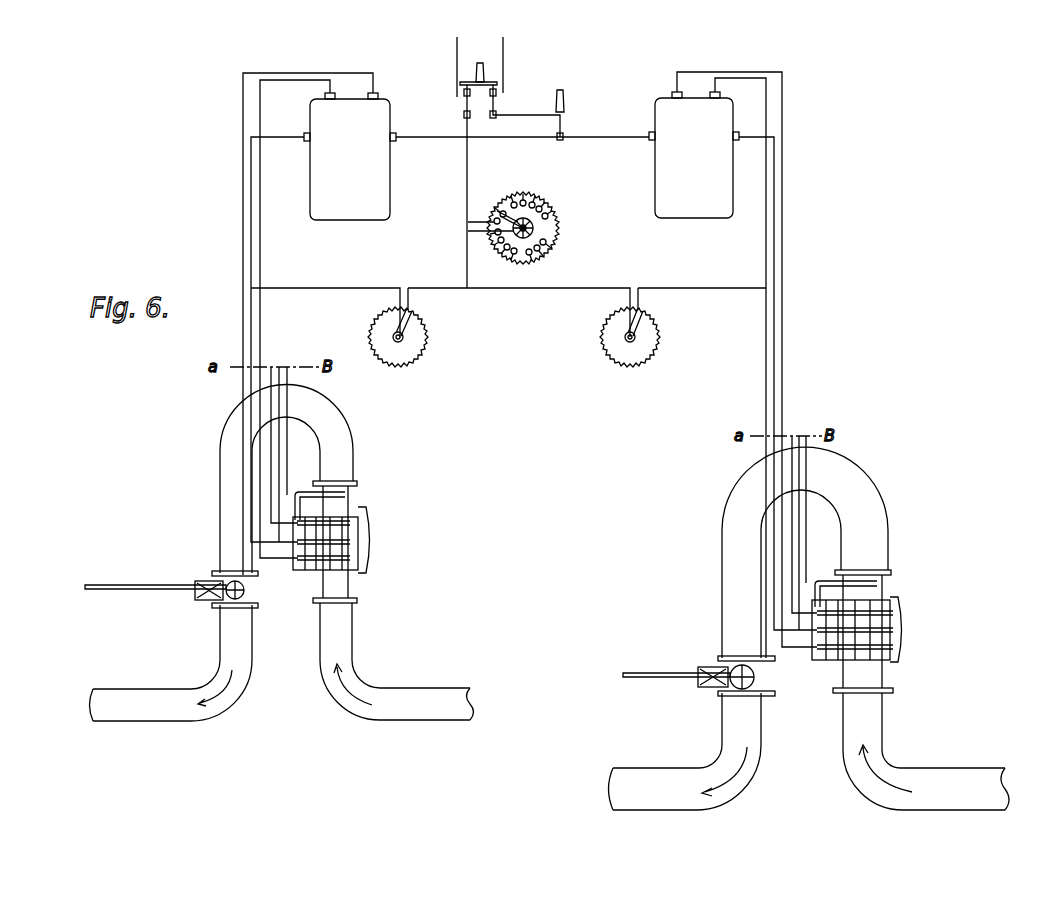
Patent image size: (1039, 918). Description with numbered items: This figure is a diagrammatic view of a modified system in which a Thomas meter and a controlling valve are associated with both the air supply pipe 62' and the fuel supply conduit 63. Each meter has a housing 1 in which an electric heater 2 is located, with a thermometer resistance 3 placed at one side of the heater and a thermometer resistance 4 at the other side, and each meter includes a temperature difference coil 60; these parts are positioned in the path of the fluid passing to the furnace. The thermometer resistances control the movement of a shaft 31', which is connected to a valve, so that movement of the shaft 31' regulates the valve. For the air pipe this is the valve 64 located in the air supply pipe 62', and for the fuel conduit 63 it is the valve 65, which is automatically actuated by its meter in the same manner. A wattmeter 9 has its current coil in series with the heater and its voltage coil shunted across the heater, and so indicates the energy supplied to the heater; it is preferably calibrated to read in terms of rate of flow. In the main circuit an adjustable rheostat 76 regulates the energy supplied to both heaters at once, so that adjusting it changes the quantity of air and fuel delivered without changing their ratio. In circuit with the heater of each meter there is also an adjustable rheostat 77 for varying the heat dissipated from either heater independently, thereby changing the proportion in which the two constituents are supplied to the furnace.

The wattmeter 9 is at (521, 156).
The adjustable rheostat 76 is at (538, 232).
The adjustable rheostat 77 is at (416, 341).
The temperature difference coil 60 is at (357, 487).
The housing 1 is at (345, 505).
The thermometer resistance 4 is at (350, 523).
The electric heater 2 is at (350, 542).
The thermometer resistance 3 is at (350, 558).
The shaft 31' is at (407, 621).
The valve 65 is at (250, 592).
The valve 64 is at (767, 680).
The fuel supply conduit 63 is at (230, 708).
The air supply pipe 62' is at (809, 751).